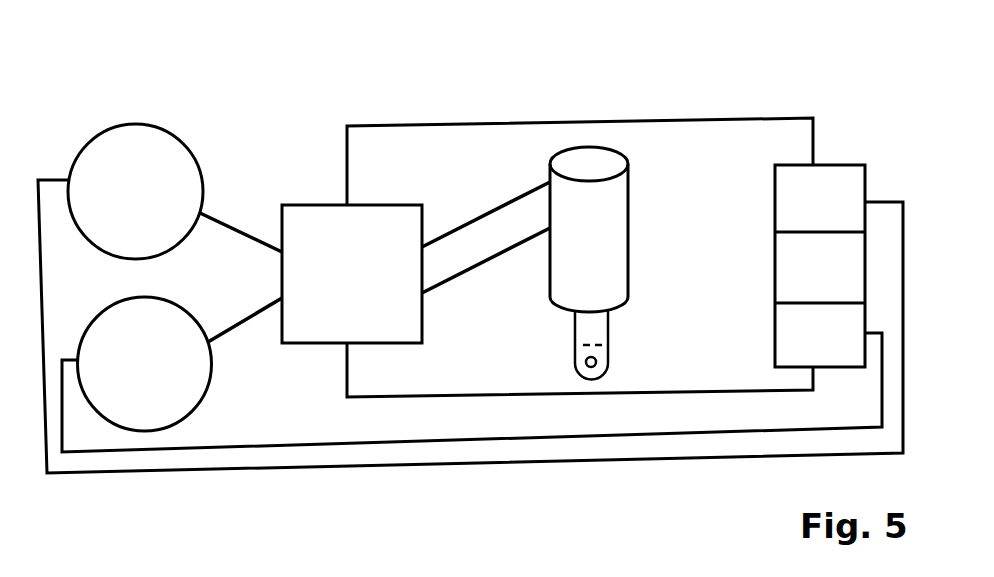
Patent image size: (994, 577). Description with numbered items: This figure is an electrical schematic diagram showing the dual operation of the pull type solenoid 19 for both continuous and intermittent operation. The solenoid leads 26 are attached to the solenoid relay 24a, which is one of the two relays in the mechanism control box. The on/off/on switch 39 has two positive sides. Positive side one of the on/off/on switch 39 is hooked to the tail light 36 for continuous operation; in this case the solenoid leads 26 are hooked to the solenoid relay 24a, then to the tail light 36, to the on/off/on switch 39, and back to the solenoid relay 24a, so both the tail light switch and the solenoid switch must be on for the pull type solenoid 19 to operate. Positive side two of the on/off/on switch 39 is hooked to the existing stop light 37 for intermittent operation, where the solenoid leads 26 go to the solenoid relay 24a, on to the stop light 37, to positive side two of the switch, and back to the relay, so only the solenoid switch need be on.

The pull type solenoid 19 is at (575, 147).
The solenoid relay 24a is at (312, 207).
The solenoid leads 26 is at (505, 200).
The tail light 36 is at (163, 130).
The stop light 37 is at (210, 382).
The on/off/on switch 39 is at (775, 255).